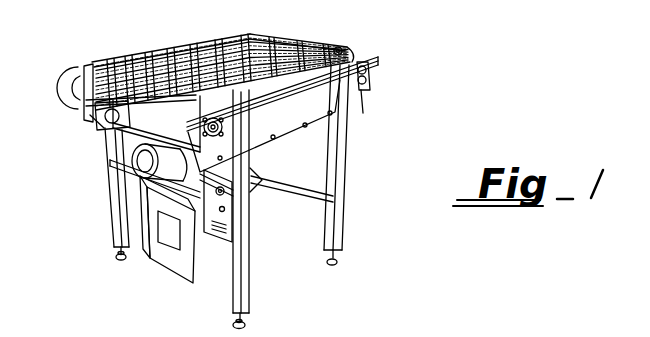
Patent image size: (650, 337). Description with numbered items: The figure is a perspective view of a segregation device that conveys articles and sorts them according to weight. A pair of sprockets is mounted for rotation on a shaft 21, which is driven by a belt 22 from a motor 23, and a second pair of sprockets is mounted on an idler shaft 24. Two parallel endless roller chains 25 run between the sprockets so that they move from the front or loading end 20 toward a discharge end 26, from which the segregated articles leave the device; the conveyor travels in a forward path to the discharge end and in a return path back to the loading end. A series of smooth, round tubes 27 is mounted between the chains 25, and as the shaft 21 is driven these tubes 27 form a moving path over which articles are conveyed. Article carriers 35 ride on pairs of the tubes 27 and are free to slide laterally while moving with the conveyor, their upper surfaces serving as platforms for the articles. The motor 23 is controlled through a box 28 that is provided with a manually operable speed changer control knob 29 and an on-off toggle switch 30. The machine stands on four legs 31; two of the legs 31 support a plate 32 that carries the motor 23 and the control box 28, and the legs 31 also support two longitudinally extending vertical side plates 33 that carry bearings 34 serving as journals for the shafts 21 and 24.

The loading end 20 is at (156, 41).
The shaft 21 is at (223, 127).
The belt 22 is at (103, 140).
The motor 23 is at (148, 160).
The idler shaft 24 is at (366, 80).
The endless roller chains 25 is at (200, 46).
The discharge end 26 is at (361, 47).
The tubes 27 is at (277, 38).
The box 28 is at (180, 268).
The speed changer control knob 29 is at (224, 191).
The on-off toggle switch 30 is at (227, 213).
The legs 31 is at (251, 296).
The plate 32 is at (119, 197).
The vertical side plates 33 is at (87, 127).
The bearings 34 is at (250, 160).
The article carriers 35 is at (337, 47).